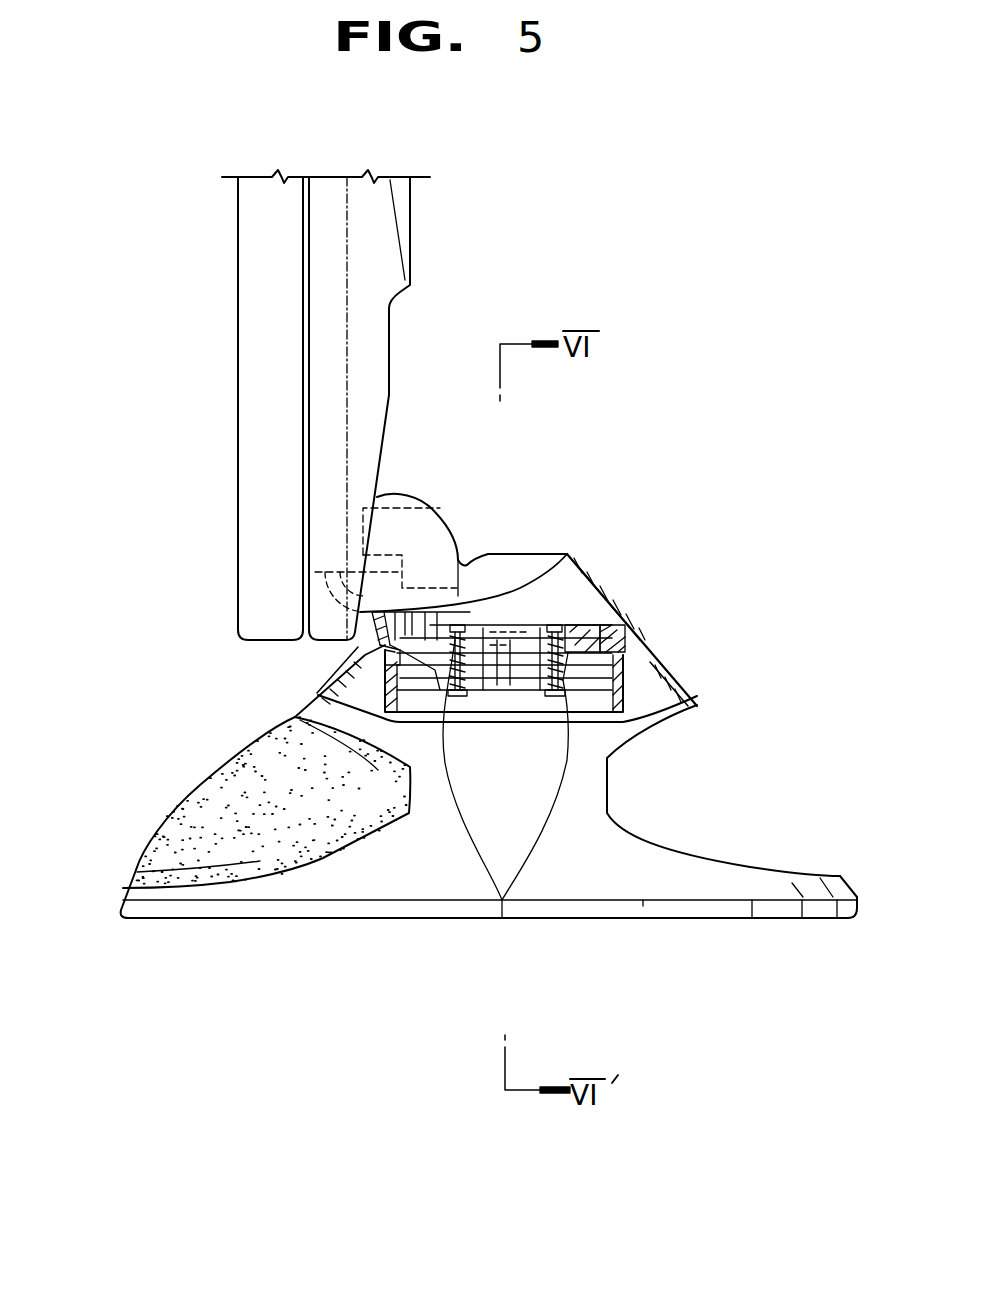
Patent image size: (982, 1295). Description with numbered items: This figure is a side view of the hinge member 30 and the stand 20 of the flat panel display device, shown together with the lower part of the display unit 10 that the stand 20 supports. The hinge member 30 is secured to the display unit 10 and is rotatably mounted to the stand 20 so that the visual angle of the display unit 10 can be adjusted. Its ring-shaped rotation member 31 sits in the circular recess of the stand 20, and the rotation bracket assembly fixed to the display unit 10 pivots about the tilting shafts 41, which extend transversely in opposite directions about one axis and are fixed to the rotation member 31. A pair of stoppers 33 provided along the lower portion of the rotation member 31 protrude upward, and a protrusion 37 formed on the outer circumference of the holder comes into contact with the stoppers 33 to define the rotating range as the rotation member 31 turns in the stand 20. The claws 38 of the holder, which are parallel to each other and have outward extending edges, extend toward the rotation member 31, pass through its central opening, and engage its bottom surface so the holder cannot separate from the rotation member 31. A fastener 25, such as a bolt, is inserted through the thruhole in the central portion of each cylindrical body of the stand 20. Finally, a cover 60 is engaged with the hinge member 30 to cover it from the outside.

The display unit 10 is at (238, 452).
The stand 20 is at (160, 840).
The fastener 25 is at (504, 920).
The hinge member 30 is at (650, 652).
The rotation member 31 is at (568, 640).
The stoppers 33 is at (362, 643).
The protrusion 37 is at (603, 628).
The claws 38 is at (490, 628).
The tilting shafts 41 is at (362, 572).
The cover 60 is at (558, 625).